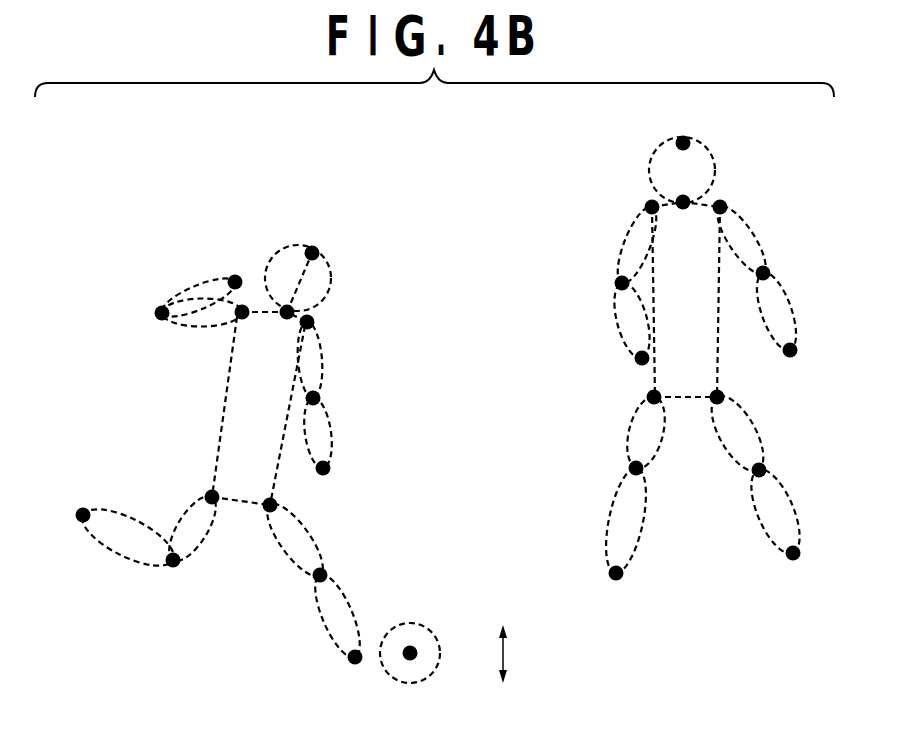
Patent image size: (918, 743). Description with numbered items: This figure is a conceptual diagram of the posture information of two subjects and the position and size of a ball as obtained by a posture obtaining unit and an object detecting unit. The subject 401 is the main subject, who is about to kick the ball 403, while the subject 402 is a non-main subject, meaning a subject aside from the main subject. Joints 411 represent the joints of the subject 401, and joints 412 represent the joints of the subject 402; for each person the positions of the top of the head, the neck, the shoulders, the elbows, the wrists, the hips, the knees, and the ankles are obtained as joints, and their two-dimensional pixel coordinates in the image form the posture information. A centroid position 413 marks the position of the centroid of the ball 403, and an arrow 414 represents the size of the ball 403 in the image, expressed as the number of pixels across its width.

The subject 401 is at (332, 275).
The subject 402 is at (713, 152).
The ball 403 is at (409, 623).
The joints 411 is at (235, 276).
The joints 412 is at (683, 136).
The centroid position 413 is at (417, 656).
The arrow 414 is at (508, 658).